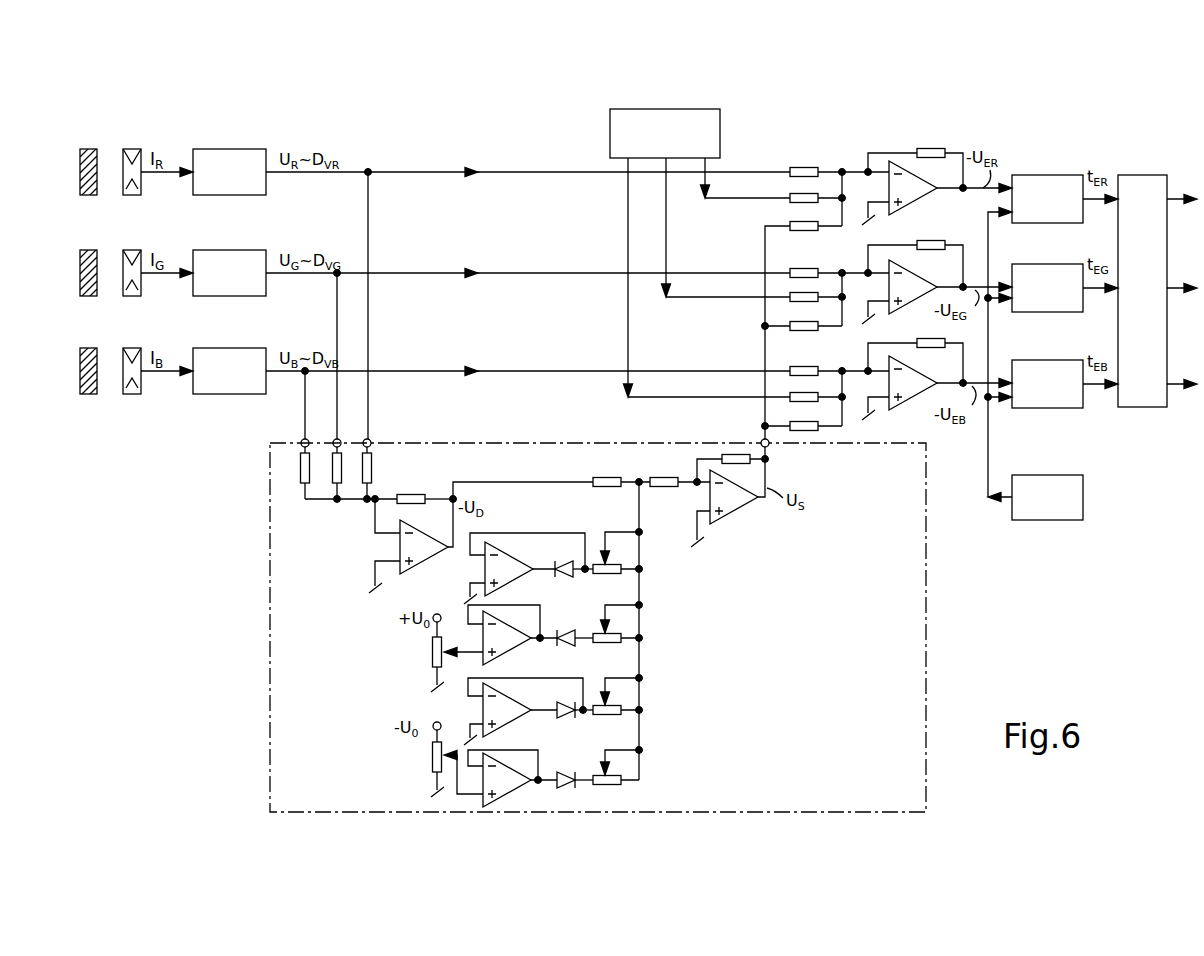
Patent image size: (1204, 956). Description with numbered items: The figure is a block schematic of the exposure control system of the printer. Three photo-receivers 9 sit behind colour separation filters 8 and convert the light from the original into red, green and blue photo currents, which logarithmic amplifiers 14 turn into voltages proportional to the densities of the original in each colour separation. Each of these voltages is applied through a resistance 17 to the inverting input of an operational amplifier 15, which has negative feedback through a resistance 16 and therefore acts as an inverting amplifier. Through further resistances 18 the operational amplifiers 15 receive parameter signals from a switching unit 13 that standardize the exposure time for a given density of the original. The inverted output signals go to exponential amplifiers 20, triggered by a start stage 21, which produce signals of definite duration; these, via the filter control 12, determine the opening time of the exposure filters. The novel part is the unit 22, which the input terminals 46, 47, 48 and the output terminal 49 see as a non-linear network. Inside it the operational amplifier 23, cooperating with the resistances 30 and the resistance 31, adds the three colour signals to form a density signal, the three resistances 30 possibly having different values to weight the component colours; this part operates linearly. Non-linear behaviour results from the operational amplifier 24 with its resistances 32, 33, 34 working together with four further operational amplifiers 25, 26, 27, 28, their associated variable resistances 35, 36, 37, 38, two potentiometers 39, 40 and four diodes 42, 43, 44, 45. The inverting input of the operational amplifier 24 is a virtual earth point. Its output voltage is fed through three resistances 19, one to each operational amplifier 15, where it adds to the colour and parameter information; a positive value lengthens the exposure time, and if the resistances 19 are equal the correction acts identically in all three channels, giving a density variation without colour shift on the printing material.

The filters 8 is at (82, 177).
The photo-receivers 9 is at (132, 196).
The filter control 12 is at (1141, 174).
The switching unit 13 is at (611, 145).
The logarithmic amplifiers 14 is at (214, 195).
The operational amplifiers 15 is at (925, 190).
The resistances 16 is at (929, 148).
The resistances 17 is at (796, 169).
The resistances 18 is at (796, 195).
The resistances 19 is at (796, 223).
The exponential amplifiers 20 is at (1043, 223).
The start stage 21 is at (1046, 520).
The unit 22 is at (917, 630).
The operational amplifier 23 is at (417, 554).
The operational amplifier 24 is at (735, 506).
The operational amplifier 25 is at (514, 577).
The operational amplifier 26 is at (512, 646).
The operational amplifier 27 is at (511, 718).
The operational amplifier 28 is at (514, 789).
The fixed resistances 30 is at (333, 471).
The fixed resistance 31 is at (413, 495).
The fixed resistance 32 is at (607, 477).
The fixed resistance 33 is at (664, 477).
The fixed resistance 34 is at (746, 463).
The variable resistance 35 is at (616, 567).
The variable resistance 36 is at (616, 638).
The variable resistance 37 is at (616, 711).
The variable resistance 38 is at (606, 785).
The potentiometer 39 is at (431, 657).
The potentiometer 40 is at (431, 763).
The diode 42 is at (563, 563).
The diode 43 is at (565, 629).
The diode 44 is at (568, 718).
The diode 45 is at (560, 772).
The input terminal 46 is at (302, 439).
The input terminal 47 is at (334, 439).
The input terminal 48 is at (364, 439).
The output terminal 49 is at (760, 439).